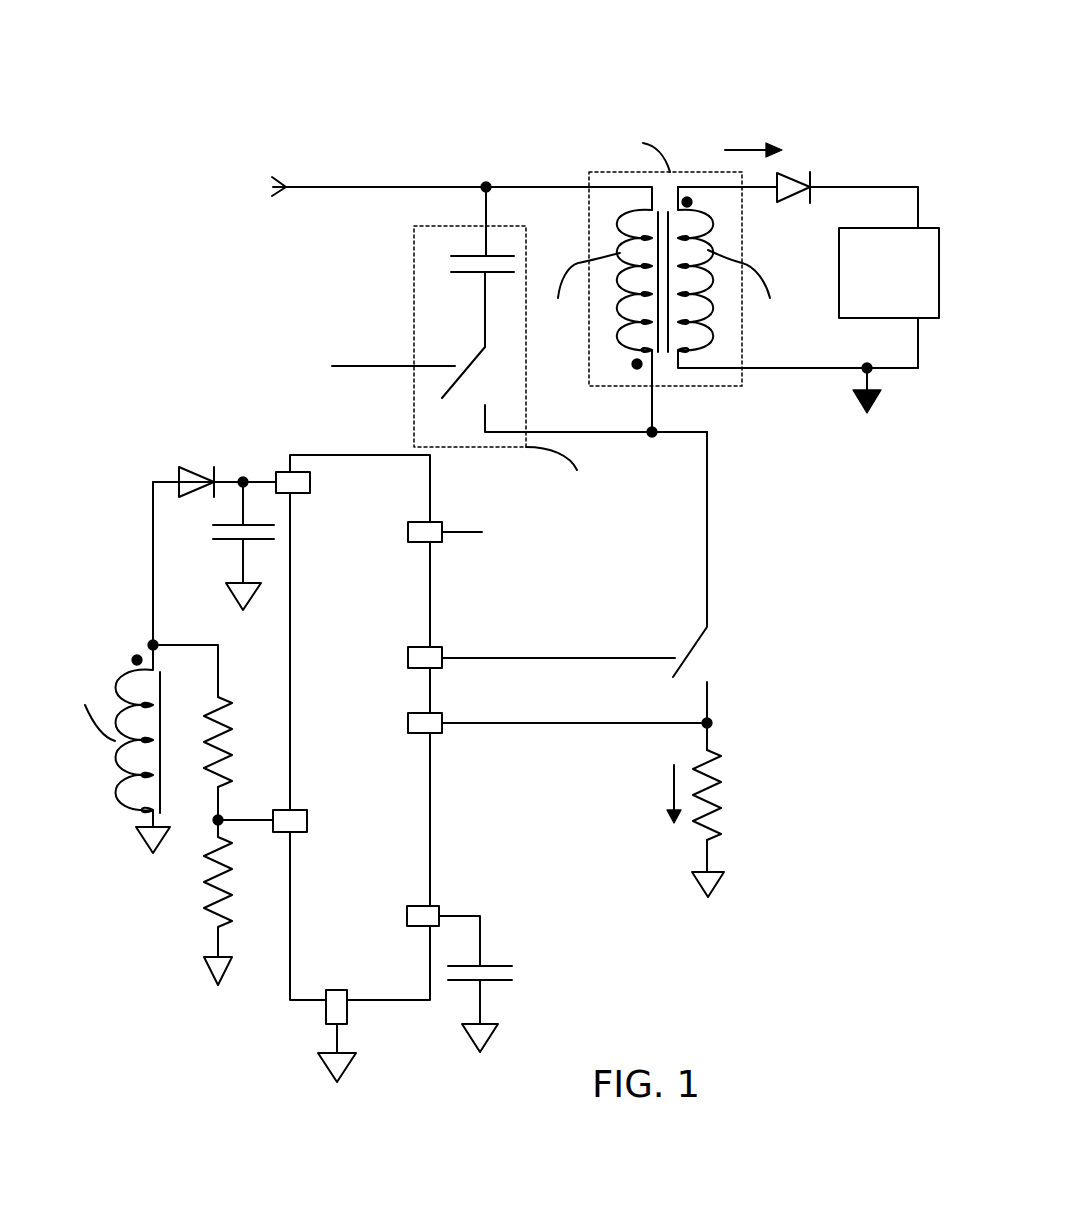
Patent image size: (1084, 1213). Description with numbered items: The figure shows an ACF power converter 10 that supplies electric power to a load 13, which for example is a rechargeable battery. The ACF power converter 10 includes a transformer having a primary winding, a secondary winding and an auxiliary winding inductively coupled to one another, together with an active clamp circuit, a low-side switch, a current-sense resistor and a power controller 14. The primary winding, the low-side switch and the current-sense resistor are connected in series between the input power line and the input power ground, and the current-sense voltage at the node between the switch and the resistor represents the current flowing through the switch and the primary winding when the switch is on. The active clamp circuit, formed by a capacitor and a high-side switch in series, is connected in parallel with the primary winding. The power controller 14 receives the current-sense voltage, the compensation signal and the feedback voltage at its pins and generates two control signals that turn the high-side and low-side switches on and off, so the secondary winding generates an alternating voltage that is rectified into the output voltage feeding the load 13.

The ACF power converter 10 is at (527, 54).
The load 13 is at (877, 298).
The power controller 14 is at (367, 631).